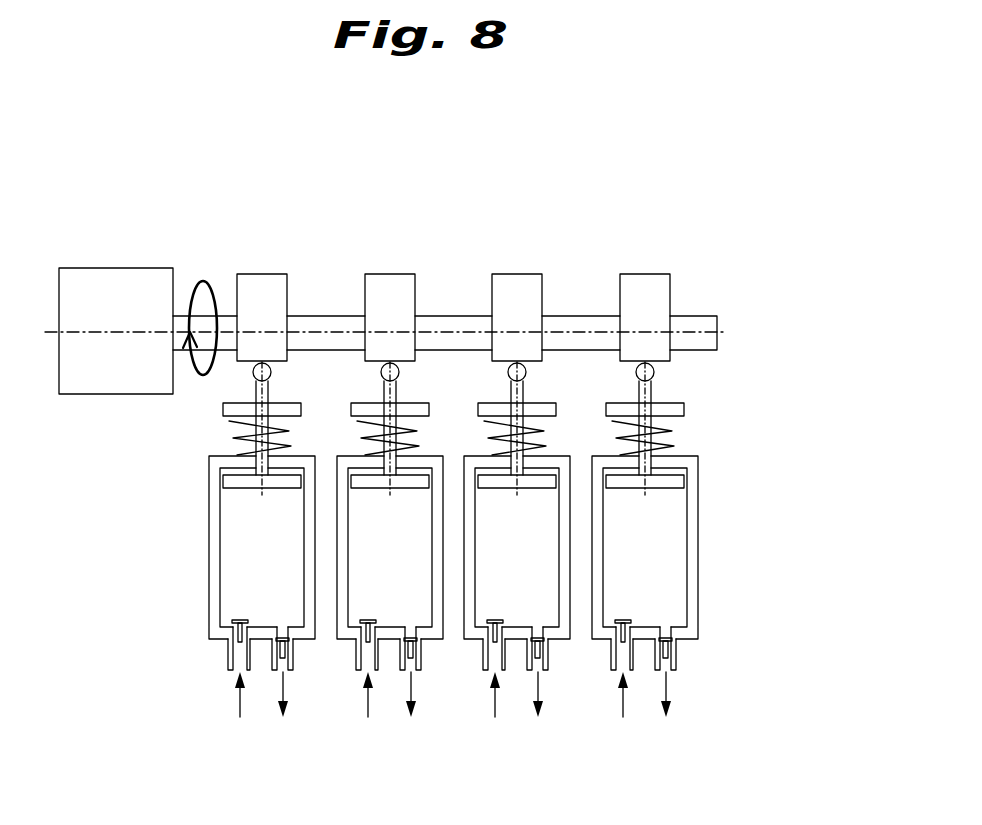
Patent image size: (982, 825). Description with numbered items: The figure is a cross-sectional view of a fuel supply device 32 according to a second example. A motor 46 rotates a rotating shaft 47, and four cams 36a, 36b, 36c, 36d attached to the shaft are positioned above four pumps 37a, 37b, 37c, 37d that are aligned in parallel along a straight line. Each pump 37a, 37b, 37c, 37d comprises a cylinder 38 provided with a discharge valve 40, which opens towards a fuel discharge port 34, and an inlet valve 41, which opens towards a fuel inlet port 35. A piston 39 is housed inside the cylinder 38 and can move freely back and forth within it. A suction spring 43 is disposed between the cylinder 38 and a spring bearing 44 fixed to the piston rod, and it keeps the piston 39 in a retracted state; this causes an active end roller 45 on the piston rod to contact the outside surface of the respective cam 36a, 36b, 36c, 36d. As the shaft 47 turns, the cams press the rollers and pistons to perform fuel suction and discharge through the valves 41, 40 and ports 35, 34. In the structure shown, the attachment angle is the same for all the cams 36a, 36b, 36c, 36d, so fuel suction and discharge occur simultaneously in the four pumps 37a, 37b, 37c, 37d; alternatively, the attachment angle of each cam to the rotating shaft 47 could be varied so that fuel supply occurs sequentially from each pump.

The fuel supply device 32 is at (603, 238).
The fuel discharge port 34 is at (273, 672).
The fuel inlet port 35 is at (228, 656).
The cam 36a is at (272, 290).
The cam 36b is at (398, 283).
The cam 36c is at (523, 285).
The cam 36d is at (655, 285).
The pump 37a is at (188, 565).
The pump 37b is at (335, 645).
The pump 37c is at (576, 557).
The pump 37d is at (708, 505).
The cylinder 38 is at (208, 548).
The piston 39 is at (258, 486).
The discharge valve 40 is at (270, 653).
The inlet valve 41 is at (240, 618).
The suction spring 43 is at (230, 438).
The spring bearing 44 is at (227, 401).
The active end roller 45 is at (251, 374).
The motor 46 is at (148, 282).
The rotating shaft 47 is at (332, 318).